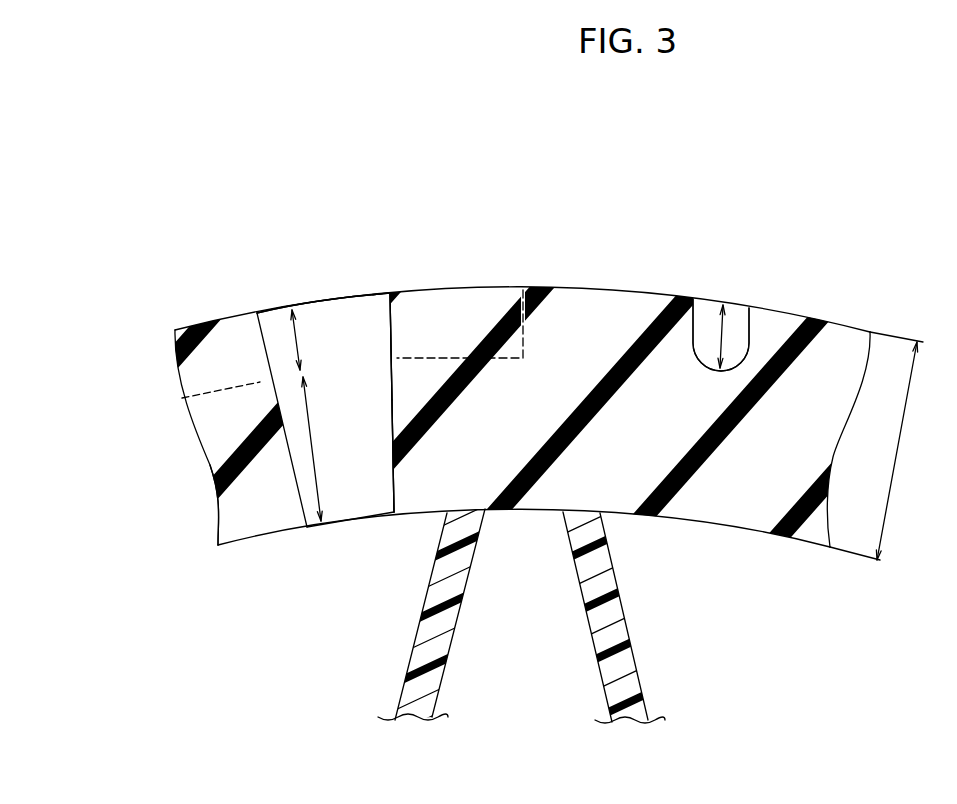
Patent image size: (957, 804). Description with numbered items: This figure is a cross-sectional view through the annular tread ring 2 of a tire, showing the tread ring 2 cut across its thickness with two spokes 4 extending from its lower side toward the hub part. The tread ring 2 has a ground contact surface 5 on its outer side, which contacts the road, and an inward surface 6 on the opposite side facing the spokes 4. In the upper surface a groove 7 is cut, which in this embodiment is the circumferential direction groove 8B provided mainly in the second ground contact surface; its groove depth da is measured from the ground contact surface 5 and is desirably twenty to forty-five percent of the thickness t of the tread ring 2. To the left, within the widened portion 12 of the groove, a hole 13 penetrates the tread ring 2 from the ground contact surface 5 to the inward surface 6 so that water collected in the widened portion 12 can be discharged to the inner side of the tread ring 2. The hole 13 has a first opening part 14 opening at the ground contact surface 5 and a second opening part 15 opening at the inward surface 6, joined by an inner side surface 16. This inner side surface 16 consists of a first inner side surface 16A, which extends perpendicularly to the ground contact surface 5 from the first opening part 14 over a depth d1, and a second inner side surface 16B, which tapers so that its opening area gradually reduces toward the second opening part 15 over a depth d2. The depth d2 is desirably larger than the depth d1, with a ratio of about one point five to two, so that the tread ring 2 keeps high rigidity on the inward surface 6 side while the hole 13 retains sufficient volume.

The tread ring 2 is at (47, 410).
The spokes 4 is at (608, 637).
The ground contact surface 5 is at (253, 316).
The inward surface 6 is at (268, 537).
The groove 7 is at (703, 320).
The circumferential direction groove on the other side 8B is at (721, 335).
The widened portion 12 is at (282, 308).
The hole 13 is at (323, 330).
The first opening part 14 is at (323, 303).
The second opening part 15 is at (347, 520).
The inner side surface 16 is at (478, 123).
The first inner side surface 16A is at (392, 335).
The second inner side surface 16B is at (393, 410).
The depth of the first inner side surface d1 is at (293, 340).
The depth of the second inner side surface d2 is at (374, 518).
The groove depth da is at (738, 315).
The thickness of the tread ring t is at (876, 446).